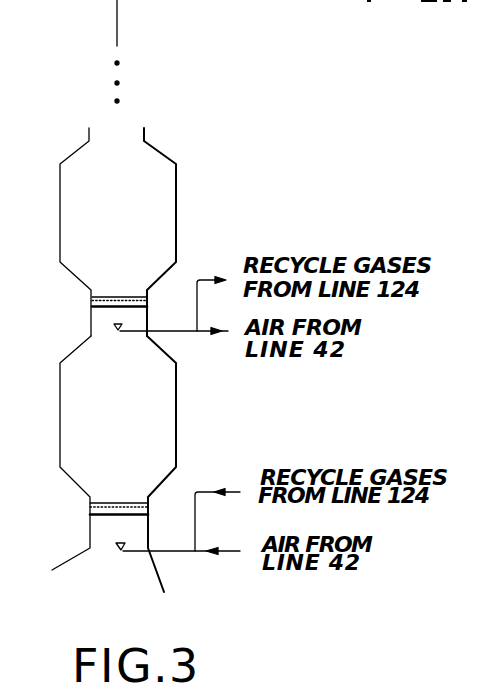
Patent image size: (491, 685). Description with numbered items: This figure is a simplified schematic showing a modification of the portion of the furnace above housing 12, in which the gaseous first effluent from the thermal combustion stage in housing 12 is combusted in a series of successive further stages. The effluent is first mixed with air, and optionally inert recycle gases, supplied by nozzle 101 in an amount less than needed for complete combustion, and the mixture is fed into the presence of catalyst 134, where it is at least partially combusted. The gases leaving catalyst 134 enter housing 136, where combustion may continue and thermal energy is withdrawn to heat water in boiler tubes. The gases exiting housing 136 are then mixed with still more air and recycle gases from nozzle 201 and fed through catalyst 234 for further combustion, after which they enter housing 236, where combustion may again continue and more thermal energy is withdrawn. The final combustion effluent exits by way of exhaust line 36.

The exhaust line 36 is at (117, 22).
The housing 236 is at (60, 220).
The catalyst 234 is at (92, 301).
The nozzle 201 is at (114, 328).
The housing 136 is at (60, 407).
The catalyst 134 is at (90, 508).
The housing 12 is at (78, 553).
The nozzle 101 is at (117, 549).